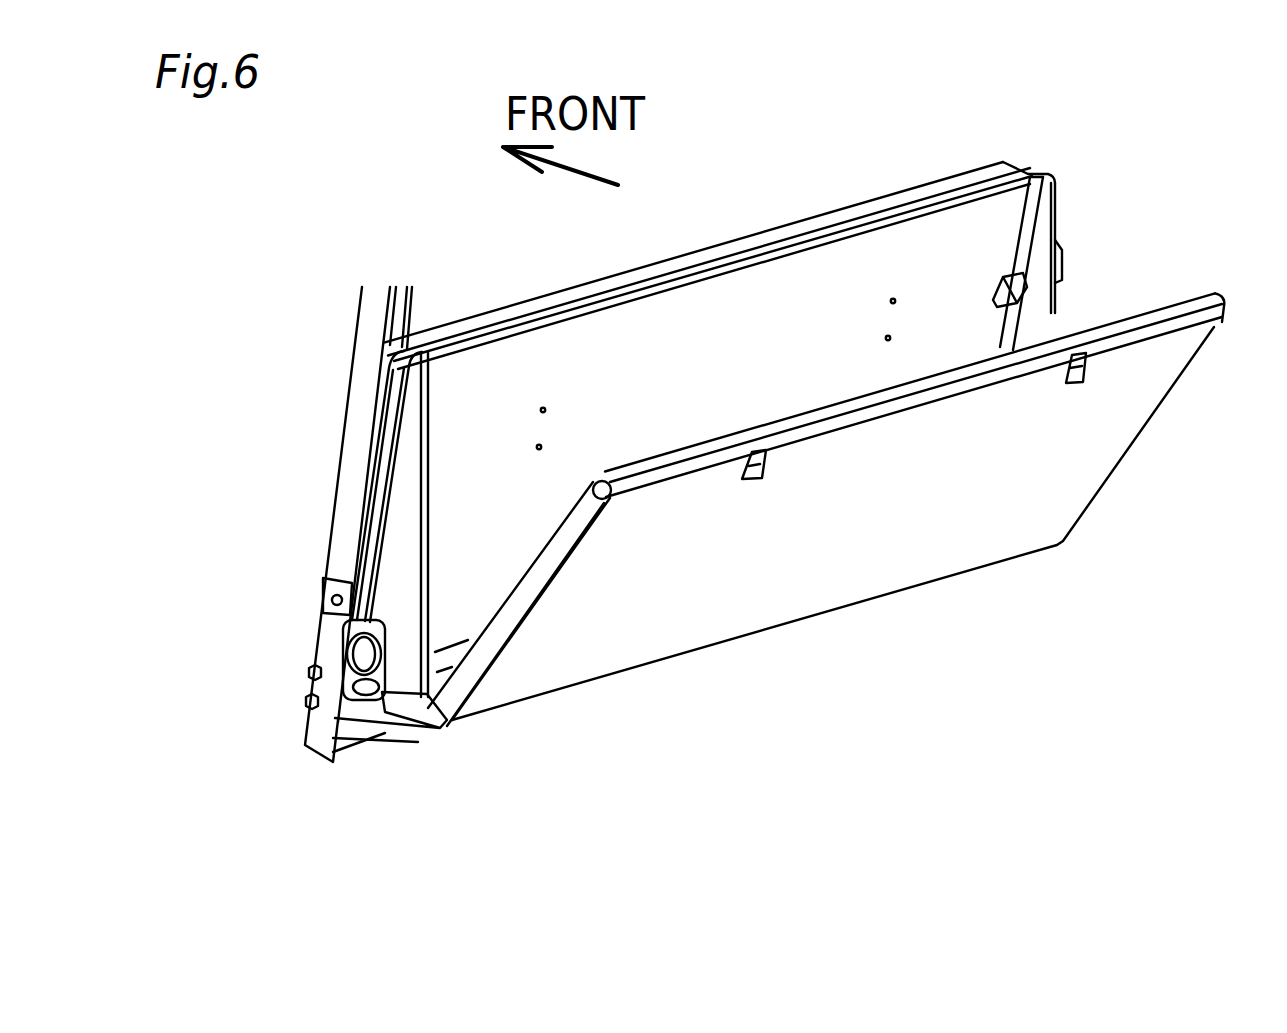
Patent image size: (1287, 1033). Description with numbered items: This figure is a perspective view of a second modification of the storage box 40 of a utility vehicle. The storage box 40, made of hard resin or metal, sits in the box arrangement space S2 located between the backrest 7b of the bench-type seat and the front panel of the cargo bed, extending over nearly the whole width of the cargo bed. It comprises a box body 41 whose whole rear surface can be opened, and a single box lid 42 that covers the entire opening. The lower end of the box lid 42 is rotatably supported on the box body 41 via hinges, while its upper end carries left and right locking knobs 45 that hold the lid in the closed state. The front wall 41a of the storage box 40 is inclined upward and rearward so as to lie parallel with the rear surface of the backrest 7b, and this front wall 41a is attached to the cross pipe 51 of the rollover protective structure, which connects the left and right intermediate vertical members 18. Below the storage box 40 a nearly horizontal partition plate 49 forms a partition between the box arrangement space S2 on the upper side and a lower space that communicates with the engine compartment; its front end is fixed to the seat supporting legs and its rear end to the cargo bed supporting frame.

The vertical member 18 is at (360, 353).
The backrest 7b is at (517, 307).
The storage box 40 is at (998, 652).
The box body 41 is at (1003, 242).
The front wall 41a is at (708, 287).
The box lid 42 is at (630, 593).
The locking knob 45 is at (750, 480).
The partition plate 49 is at (380, 733).
The cross pipe 51 is at (392, 484).
The box arrangement space S2 is at (362, 530).